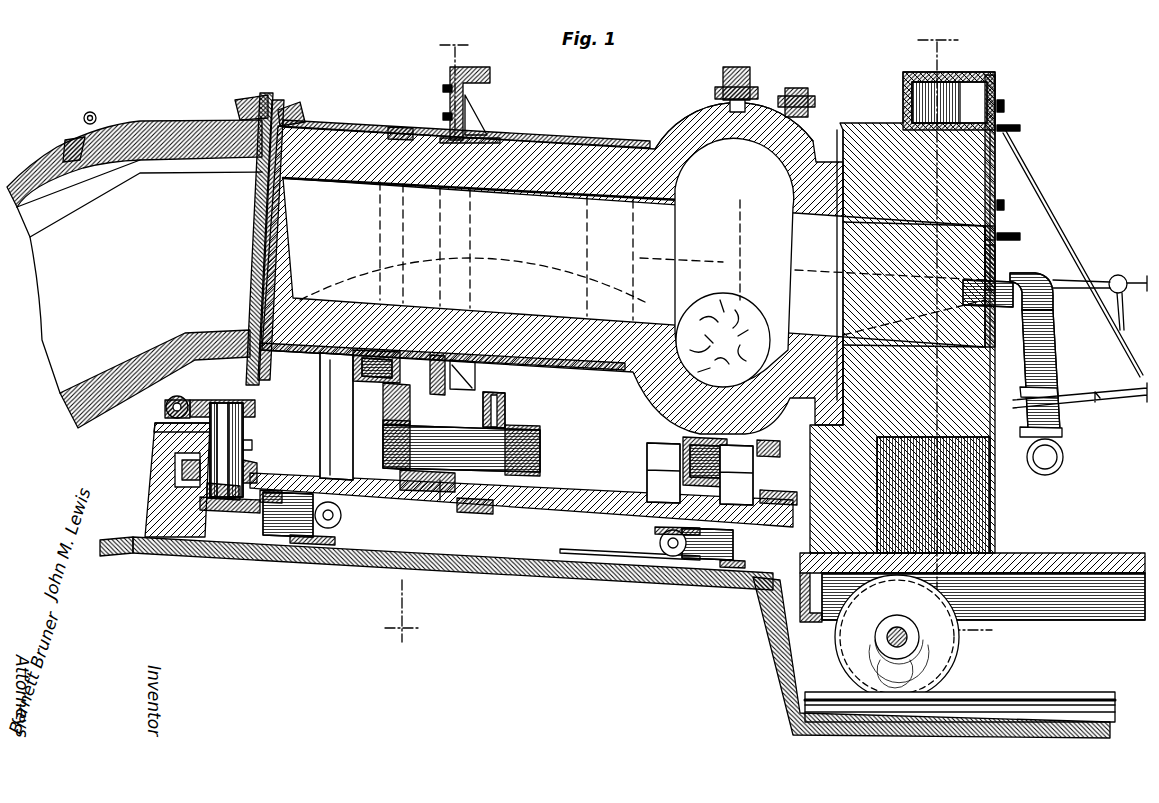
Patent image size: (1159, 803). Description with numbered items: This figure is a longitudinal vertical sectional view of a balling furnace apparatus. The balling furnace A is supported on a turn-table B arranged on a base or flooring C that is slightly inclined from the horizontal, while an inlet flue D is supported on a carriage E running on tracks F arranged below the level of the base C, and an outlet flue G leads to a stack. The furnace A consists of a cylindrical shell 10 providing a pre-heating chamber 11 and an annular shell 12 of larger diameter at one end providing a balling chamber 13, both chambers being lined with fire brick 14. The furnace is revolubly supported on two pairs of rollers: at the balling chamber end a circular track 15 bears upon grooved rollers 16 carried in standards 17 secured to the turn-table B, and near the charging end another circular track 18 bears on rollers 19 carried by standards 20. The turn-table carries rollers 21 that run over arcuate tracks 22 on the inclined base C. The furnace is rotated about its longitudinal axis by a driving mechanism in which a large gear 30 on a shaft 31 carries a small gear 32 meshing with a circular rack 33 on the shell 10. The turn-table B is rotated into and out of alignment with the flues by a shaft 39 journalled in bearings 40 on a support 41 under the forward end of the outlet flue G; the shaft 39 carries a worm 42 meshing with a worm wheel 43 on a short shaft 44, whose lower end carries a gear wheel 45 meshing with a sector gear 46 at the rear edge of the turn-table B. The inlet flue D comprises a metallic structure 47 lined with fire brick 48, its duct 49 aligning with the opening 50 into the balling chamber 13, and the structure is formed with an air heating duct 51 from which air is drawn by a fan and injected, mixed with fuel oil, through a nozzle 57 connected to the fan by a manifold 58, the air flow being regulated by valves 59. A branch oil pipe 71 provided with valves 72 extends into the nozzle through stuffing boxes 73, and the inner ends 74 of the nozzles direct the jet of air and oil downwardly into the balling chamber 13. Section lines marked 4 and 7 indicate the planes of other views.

The balling furnace A is at (580, 148).
The turn-table B is at (566, 495).
The base or flooring C is at (480, 555).
The inlet flue D is at (1012, 190).
The carriage E is at (1040, 552).
The tracks F is at (1006, 698).
The outlet flue G is at (145, 120).
The section line 4 is at (955, 328).
The section line 7 is at (427, 334).
The cylindrical shell 10 is at (345, 168).
The pre-heating chamber 11 is at (358, 148).
The annular shell 12 is at (683, 128).
The balling chamber 13 is at (668, 142).
The fire brick 14 is at (433, 138).
The circular track 15 is at (737, 66).
The grooved rollers 16 is at (672, 447).
The standards 17 is at (655, 448).
The circular track 18 is at (395, 140).
The rollers 19 is at (350, 370).
The standards 20 is at (352, 392).
The rollers 21 is at (290, 513).
The arcuate tracks 22 is at (270, 552).
The large gear 30 is at (507, 412).
The shaft 31 is at (542, 448).
The small gear 32 is at (440, 500).
The circular rack 33 is at (492, 72).
The shaft 39 is at (168, 412).
The bearings 40 is at (165, 432).
The support 41 is at (155, 462).
The worm 42 is at (176, 398).
The worm wheel 43 is at (237, 410).
The short shaft 44 is at (243, 445).
The gear wheel 45 is at (243, 470).
The sector gear 46 is at (238, 492).
The metallic structure 47 is at (1000, 105).
The fire brick 48 is at (1010, 140).
The duct 49 is at (975, 262).
The opening 50 is at (815, 128).
The air heating duct 51 is at (965, 92).
The nozzle 57 is at (1050, 328).
The manifold 58 is at (1065, 455).
The valves 59 is at (1080, 395).
The branch pipe 71 is at (1122, 312).
The valves 72 is at (1120, 275).
The stuffing boxes 73 is at (1040, 285).
The inner ends 74 is at (968, 307).